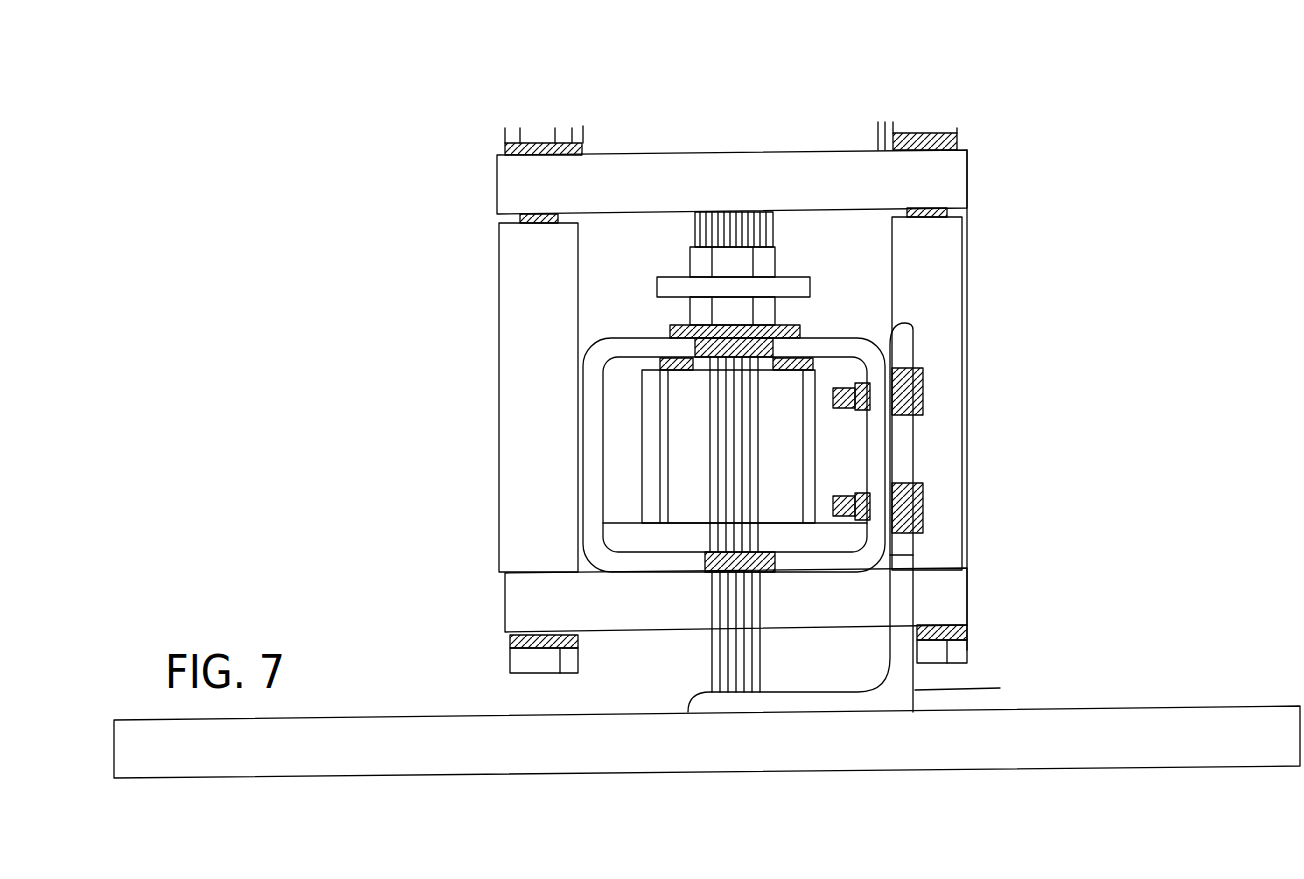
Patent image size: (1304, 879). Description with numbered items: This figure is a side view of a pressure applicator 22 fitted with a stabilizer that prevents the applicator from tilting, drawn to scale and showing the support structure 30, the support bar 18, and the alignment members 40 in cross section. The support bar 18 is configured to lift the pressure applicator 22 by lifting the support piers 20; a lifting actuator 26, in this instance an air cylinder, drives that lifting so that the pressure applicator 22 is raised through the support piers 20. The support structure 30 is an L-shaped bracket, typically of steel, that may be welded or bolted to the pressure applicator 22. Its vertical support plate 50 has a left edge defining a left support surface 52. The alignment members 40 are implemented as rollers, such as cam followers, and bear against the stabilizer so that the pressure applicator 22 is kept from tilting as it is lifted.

The support bar 18 is at (638, 338).
The support piers 20 is at (770, 228).
The pressure applicator 22 is at (1110, 703).
The lifting actuator 26 is at (690, 447).
The support structure 30 is at (1000, 688).
The alignment members 40 is at (925, 388).
The vertical support plate 50 is at (915, 600).
The left support surface 52 is at (905, 553).